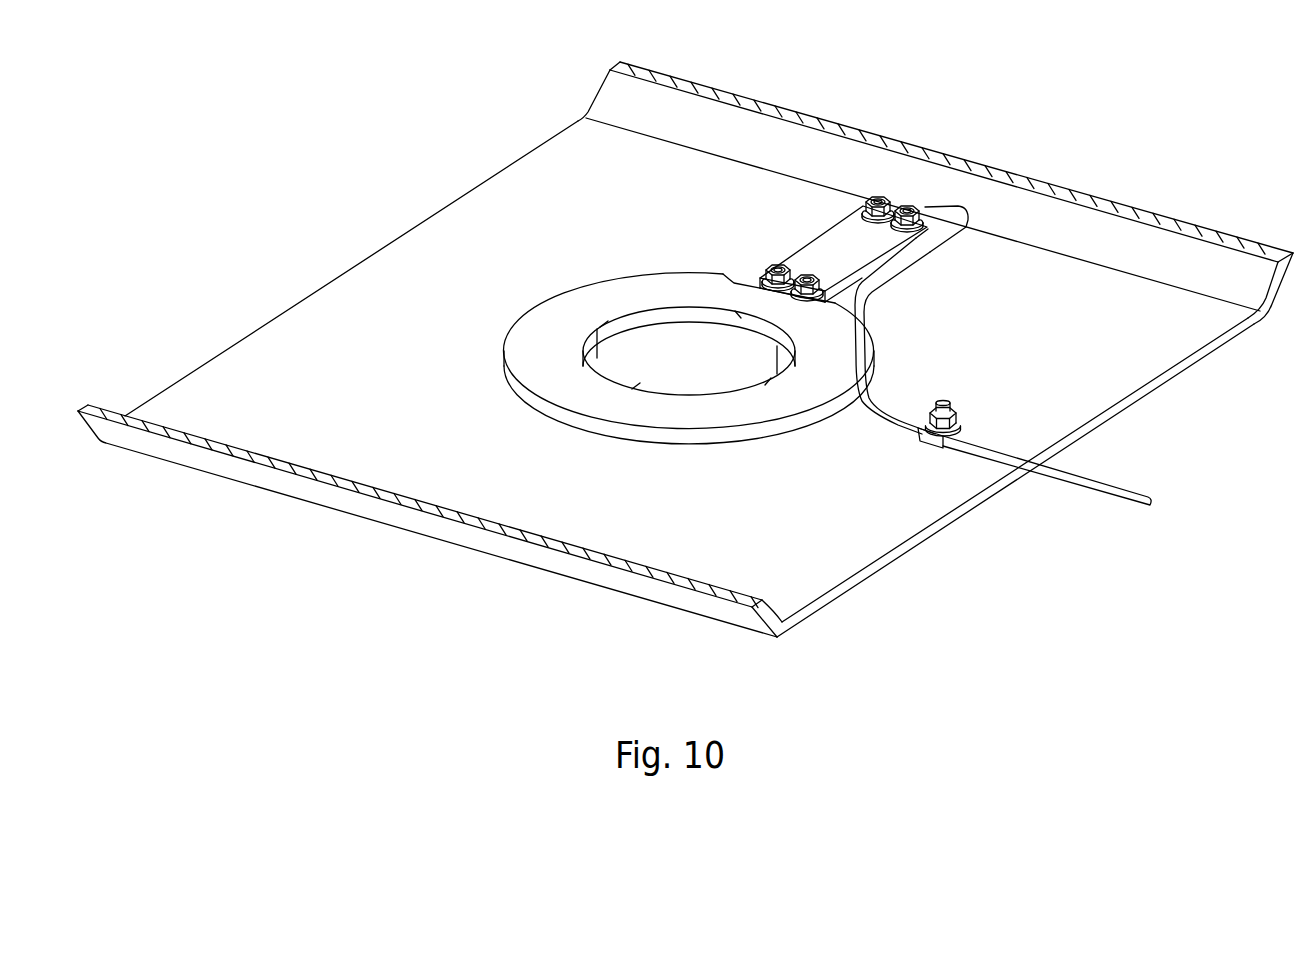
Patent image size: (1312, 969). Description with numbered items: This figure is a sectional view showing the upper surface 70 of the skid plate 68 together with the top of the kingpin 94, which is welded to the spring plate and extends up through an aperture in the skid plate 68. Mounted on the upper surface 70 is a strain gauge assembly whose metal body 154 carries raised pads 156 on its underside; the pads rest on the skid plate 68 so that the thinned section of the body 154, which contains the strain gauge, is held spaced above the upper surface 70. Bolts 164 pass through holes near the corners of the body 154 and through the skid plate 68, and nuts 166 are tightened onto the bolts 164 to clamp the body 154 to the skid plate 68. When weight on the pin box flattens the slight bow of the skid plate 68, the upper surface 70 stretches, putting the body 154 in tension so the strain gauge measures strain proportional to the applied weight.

The skid plate 68 is at (907, 547).
The upper surface 70 is at (1090, 342).
The kingpin 94 is at (647, 345).
The metal body 154 is at (852, 232).
The raised pads 156 is at (977, 242).
The bolts 164 is at (903, 208).
The nuts 166 is at (943, 210).